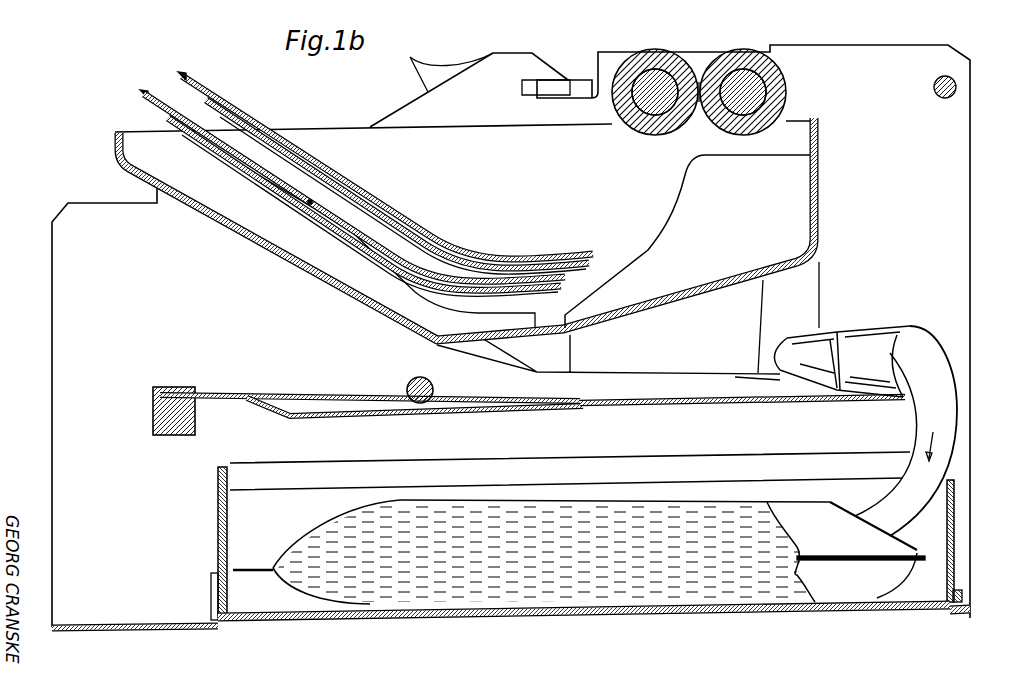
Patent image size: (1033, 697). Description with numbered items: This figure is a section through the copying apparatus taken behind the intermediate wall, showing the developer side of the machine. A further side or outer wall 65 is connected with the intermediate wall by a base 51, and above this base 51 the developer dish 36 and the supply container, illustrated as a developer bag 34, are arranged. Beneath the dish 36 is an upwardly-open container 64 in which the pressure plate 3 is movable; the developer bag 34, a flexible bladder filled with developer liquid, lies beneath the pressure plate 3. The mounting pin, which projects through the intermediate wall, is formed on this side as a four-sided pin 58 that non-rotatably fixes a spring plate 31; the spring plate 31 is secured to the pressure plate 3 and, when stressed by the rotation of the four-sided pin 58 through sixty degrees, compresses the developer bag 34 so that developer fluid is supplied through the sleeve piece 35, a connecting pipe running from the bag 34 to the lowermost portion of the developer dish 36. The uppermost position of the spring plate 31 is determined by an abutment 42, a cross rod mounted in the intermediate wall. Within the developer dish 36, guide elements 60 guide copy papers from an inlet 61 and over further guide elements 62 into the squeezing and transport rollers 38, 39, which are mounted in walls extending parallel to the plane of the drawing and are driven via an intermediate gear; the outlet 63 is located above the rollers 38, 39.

The pressure plate 3 is at (318, 418).
The spring plate 31 is at (314, 390).
The developer bag 34 is at (827, 513).
The sleeve piece 35 is at (943, 408).
The developer dish 36 is at (817, 183).
The squeezing and transport roller 38 is at (766, 66).
The squeezing and transport roller 39 is at (668, 57).
The abutment 42 is at (406, 387).
The base 51 is at (413, 622).
The four-sided pin 58 is at (160, 427).
The guide elements 60 is at (312, 200).
The inlet 61 is at (158, 81).
The guide elements 62 is at (690, 222).
The outlet 63 is at (718, 58).
The container 64 is at (953, 530).
The outer wall 65 is at (64, 330).